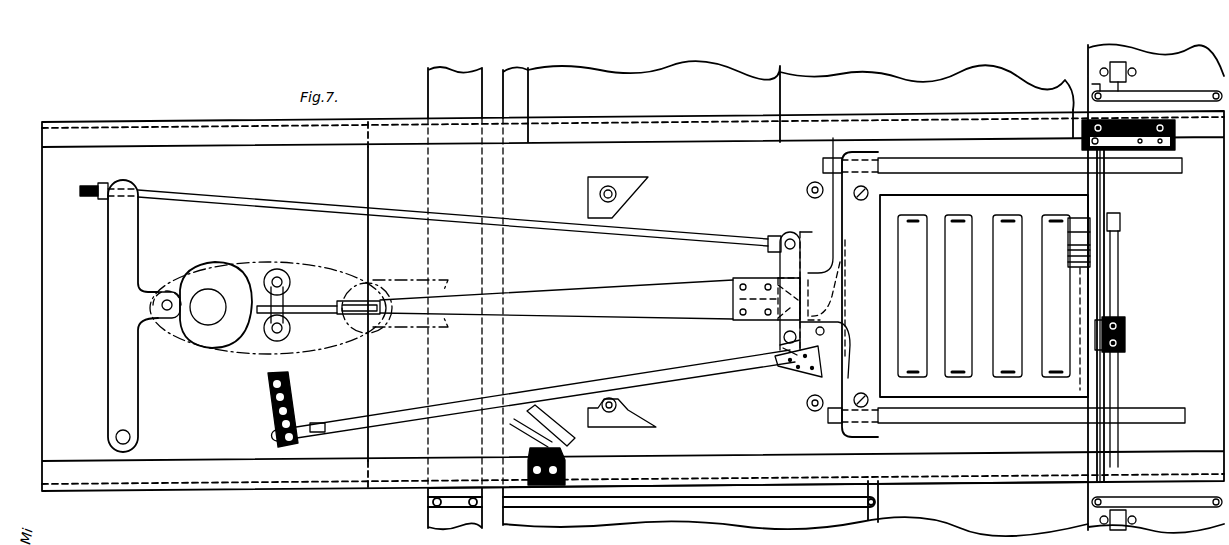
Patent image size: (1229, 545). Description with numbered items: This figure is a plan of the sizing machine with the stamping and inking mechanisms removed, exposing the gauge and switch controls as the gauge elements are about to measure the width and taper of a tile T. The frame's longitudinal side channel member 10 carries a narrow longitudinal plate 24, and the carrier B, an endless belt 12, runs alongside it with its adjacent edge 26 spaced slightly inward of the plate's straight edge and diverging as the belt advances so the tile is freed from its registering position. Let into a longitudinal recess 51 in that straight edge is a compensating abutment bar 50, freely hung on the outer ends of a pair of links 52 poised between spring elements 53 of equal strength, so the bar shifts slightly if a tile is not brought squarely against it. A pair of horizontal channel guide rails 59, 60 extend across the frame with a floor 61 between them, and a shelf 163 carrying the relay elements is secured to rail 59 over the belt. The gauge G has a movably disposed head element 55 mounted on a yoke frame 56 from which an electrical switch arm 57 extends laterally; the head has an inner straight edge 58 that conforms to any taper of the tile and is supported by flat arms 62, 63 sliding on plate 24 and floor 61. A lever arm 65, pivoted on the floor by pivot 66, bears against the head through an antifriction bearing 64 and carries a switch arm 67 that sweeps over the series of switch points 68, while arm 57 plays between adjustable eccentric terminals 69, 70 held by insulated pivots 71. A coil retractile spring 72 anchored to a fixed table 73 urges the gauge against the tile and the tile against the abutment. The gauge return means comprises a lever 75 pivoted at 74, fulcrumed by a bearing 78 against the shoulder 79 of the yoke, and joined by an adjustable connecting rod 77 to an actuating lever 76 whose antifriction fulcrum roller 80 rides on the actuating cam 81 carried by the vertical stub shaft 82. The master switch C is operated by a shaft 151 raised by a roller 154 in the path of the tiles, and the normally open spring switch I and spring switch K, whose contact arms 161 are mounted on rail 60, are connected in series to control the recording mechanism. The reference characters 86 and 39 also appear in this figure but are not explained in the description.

The top frame rail 59 is at (194, 120).
The bottom frame rail 60 is at (235, 490).
The frame side member 61 is at (892, 442).
The upper connecting bar 62 is at (958, 170).
The lower connecting bar 63 is at (1052, 416).
The clamp member 64 is at (835, 294).
The link 65 is at (838, 346).
The pivot pin 66 is at (782, 330).
The lower connecting rod 67 is at (567, 388).
The perforated adjusting plate 68 is at (296, 402).
The roller 69 is at (285, 272).
The roller 70 is at (290, 340).
The link rod 71 is at (290, 278).
The pivot 72 is at (788, 350).
The bracket 73 is at (640, 192).
The bracket 74 is at (784, 336).
The pivot link 75 is at (788, 236).
The lever 76 is at (112, 249).
The rod 77 is at (311, 210).
The plate 78 is at (733, 298).
The guide 79 is at (821, 251).
The pivot 80 is at (150, 308).
The cam 81 is at (212, 342).
The hub 82 is at (216, 292).
The guard 86 is at (187, 276).
The arm 10 is at (807, 233).
The base bar 12 is at (938, 510).
The support 24 is at (1169, 270).
The cover 26 is at (1068, 86).
The slats 39 is at (984, 296).
The rod 50 is at (1093, 378).
The rod 51 is at (1106, 189).
The bar 52 is at (1180, 92).
The bolt 53 is at (1134, 74).
The bracket 55 is at (859, 369).
The pivot block 56 is at (766, 277).
The connecting bar 57 is at (556, 299).
The bracket 58 is at (876, 258).
The rod clamp 151 is at (1121, 222).
The gear 154 is at (1073, 218).
The handle rod 161 is at (514, 427).
The panel 163 is at (654, 101).
The cover B is at (857, 82).
The clamp block C is at (1128, 322).
The bracket G is at (860, 294).
The block I is at (1086, 146).
The bracket K is at (575, 443).
The panel T is at (984, 296).